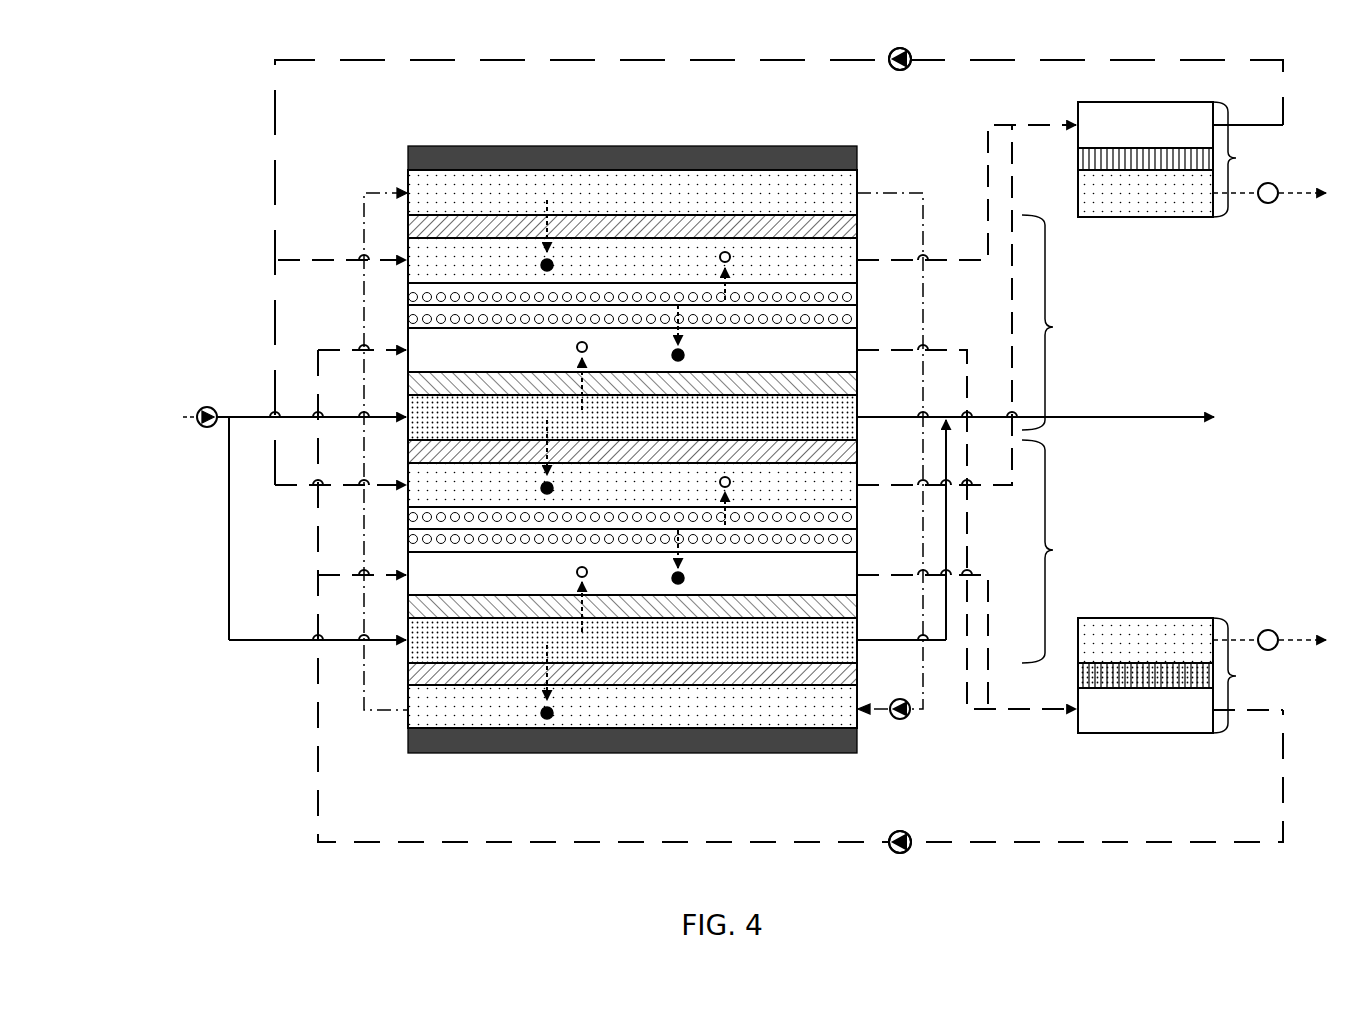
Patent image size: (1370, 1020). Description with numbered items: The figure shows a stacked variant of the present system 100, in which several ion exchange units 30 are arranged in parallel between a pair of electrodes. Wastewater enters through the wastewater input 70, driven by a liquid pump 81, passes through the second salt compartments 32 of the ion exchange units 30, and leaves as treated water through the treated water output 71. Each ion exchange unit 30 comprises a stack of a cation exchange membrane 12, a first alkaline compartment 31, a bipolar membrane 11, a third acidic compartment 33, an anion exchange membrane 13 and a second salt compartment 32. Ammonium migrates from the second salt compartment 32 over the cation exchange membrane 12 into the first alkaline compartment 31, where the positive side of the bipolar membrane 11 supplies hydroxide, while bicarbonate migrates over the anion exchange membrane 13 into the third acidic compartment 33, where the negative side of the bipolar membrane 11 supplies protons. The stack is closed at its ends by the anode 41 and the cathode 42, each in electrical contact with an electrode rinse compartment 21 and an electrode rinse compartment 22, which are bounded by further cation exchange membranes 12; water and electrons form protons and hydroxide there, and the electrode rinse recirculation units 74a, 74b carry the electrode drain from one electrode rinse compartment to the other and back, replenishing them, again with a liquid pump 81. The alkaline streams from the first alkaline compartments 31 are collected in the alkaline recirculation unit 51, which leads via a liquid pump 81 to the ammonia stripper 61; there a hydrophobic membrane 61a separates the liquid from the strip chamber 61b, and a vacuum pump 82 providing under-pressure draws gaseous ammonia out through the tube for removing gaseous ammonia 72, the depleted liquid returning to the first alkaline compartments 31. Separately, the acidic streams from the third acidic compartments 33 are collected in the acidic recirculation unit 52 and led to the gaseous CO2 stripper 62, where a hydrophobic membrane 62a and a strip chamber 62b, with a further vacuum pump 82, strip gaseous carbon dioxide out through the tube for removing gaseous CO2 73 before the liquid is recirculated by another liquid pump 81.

The present system 100 is at (749, 452).
The alkaline recirculation unit 51 is at (779, 261).
The acidic recirculation unit 52 is at (800, 606).
The liquid pump 81 is at (554, 452).
The vacuum pump 82 is at (1268, 416).
The anode 41 is at (632, 143).
The cathode 42 is at (632, 756).
The electrode rinse compartment (anodic) 21 is at (632, 192).
The electrode rinse compartment (cathodic) 22 is at (632, 706).
The cation exchange membrane 12 is at (616, 450).
The bipolar membrane 11 is at (616, 417).
The anion exchange membrane 13 is at (616, 495).
The first alkaline compartment 31 is at (632, 372).
The third acidic compartment 33 is at (632, 461).
The second salt compartment 32 is at (632, 529).
The ion exchange unit 30 is at (1053, 327).
The electrode rinse recirculation unit 74a is at (890, 444).
The electrode rinse recirculation unit 74b is at (386, 459).
The wastewater input 70 is at (183, 417).
The treated water output 71 is at (1052, 418).
The tube for removing gaseous ammonia 72 is at (1284, 194).
The tube for removing gaseous CO2 73 is at (1284, 641).
The ammonia stripper 61 is at (1166, 159).
The hydrophobic membrane 61a is at (1127, 159).
The strip chamber 61b is at (1126, 193).
The gaseous CO2 stripper 62 is at (1167, 665).
The hydrophobic membrane 62a is at (1127, 675).
The strip chamber 62b is at (1145, 630).